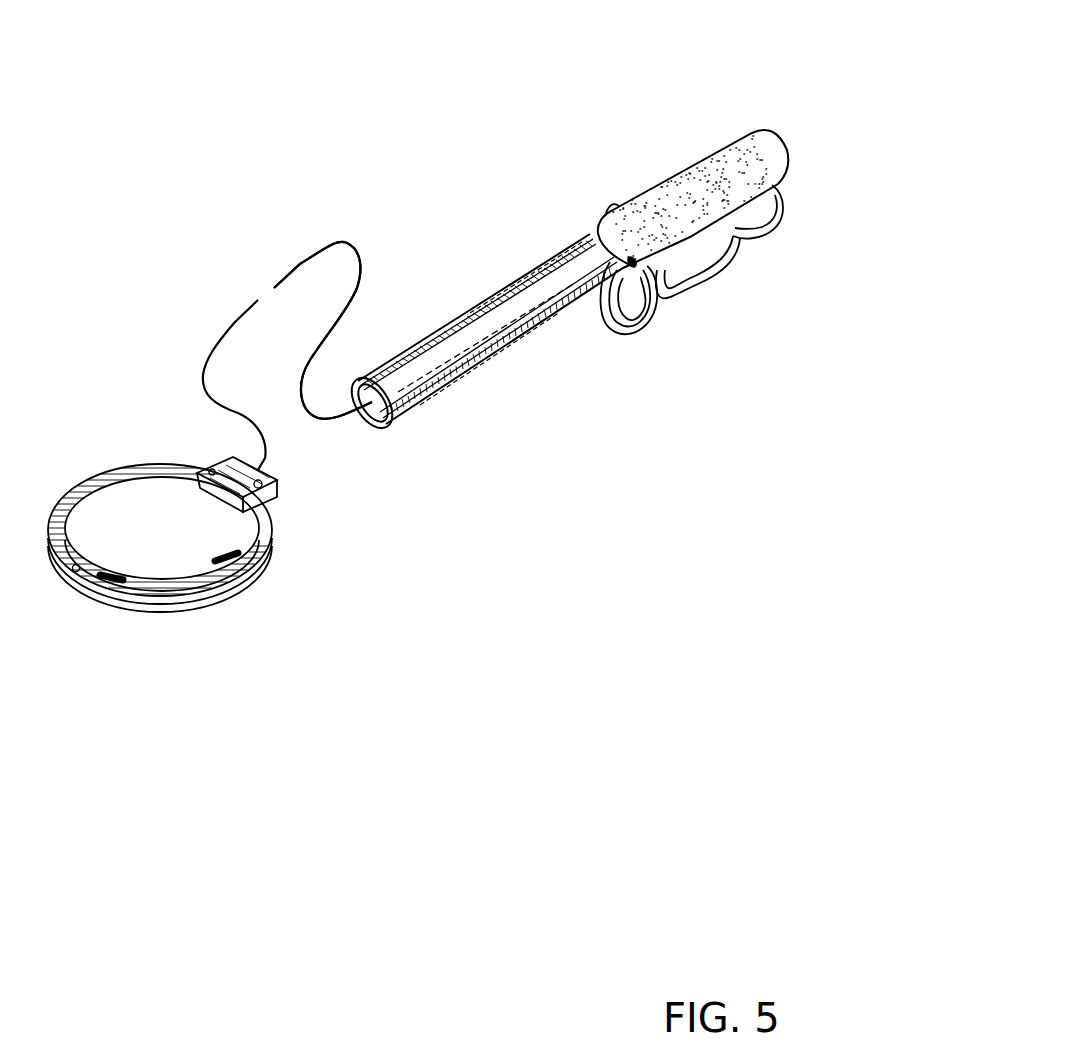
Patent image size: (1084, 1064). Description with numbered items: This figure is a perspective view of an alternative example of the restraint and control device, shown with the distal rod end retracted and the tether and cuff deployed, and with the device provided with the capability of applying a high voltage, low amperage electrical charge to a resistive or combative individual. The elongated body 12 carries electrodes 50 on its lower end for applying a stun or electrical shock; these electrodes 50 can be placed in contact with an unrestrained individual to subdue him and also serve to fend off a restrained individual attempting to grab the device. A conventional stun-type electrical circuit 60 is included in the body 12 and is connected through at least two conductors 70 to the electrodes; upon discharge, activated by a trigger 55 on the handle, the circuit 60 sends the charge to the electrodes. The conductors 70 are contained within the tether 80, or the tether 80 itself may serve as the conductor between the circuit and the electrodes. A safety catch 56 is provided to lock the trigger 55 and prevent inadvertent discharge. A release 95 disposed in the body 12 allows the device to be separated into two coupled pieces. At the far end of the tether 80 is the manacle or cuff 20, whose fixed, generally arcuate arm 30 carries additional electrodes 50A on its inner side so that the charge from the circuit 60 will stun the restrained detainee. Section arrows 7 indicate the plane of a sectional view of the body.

The body 12 is at (592, 233).
The manacle or cuff 20 is at (105, 440).
The fixed arm 30 is at (264, 527).
The electrodes 50 is at (498, 296).
The additional electrodes 50A is at (226, 560).
The trigger 55 is at (650, 327).
The safety catch 56 is at (634, 266).
The electrical circuit 60 is at (738, 170).
The conductors 70 is at (249, 312).
The tether 80 is at (320, 242).
The release 95 is at (613, 210).
The section view indicator 7 is at (456, 290).